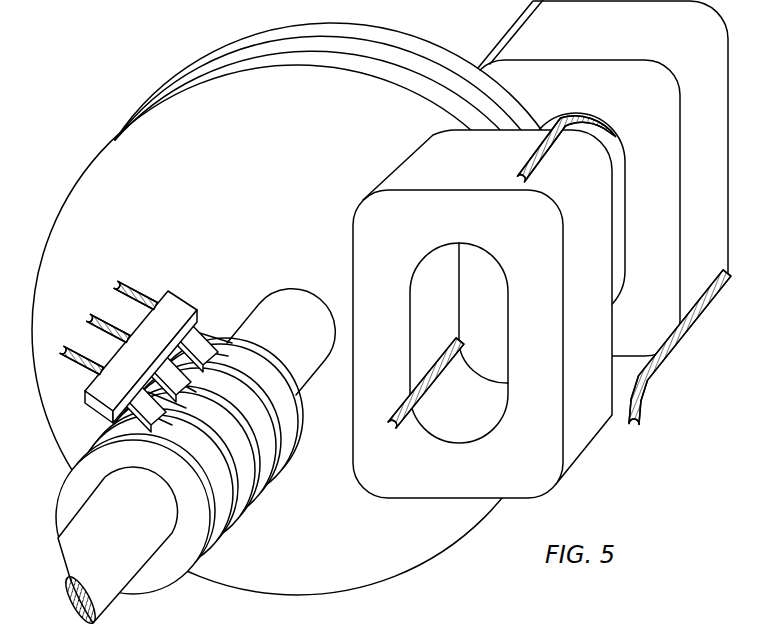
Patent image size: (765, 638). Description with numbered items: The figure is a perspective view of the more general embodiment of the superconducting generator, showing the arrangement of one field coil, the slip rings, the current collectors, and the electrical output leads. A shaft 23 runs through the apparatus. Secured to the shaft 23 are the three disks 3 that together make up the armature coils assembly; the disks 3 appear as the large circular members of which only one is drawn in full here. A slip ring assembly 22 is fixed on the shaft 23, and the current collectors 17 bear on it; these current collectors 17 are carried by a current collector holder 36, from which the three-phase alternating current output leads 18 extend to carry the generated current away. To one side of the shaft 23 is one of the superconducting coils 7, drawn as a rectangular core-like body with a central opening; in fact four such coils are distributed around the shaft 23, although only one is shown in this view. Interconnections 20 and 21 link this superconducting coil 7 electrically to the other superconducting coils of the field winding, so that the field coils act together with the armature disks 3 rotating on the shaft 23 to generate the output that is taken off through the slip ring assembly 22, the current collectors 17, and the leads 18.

The disk 3 is at (386, 108).
The superconducting coil 7 is at (500, 170).
The current collectors 17 is at (146, 388).
The three-phase alternating current output leads 18 is at (113, 300).
The interconnection between superconducting coils 20 is at (536, 160).
The interconnection between superconducting coils 21 is at (428, 378).
The slip ring assembly 22 is at (202, 512).
The shaft 23 is at (303, 345).
The current collector holder 36 is at (96, 386).